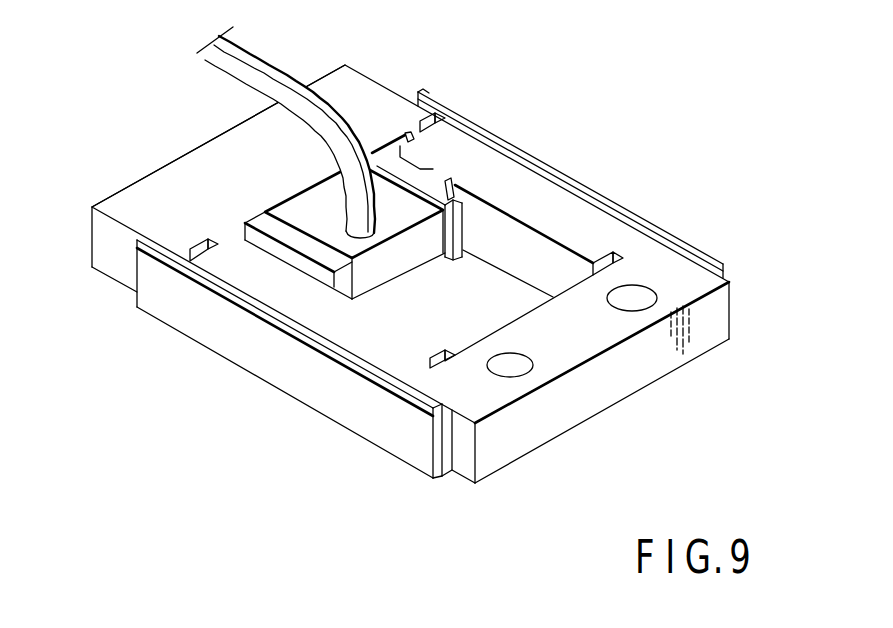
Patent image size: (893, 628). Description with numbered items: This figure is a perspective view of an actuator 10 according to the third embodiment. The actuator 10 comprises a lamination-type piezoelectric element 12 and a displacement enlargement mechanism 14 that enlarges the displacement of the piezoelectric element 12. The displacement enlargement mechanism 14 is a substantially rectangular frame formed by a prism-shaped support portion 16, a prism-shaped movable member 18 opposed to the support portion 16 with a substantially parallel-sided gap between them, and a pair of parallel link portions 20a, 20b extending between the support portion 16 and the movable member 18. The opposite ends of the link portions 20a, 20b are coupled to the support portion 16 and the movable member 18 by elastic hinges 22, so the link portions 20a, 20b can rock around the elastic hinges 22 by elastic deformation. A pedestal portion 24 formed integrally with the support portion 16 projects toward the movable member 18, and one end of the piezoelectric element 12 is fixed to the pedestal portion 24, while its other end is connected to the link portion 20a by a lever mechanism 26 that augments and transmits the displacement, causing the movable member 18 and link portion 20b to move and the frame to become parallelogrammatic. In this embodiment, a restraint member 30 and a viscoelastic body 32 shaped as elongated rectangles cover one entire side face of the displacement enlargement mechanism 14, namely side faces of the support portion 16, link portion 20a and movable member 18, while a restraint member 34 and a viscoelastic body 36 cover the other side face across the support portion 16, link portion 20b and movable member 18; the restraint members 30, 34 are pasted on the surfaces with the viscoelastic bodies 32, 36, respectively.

The actuator 10 is at (458, 76).
The piezoelectric element 12 is at (343, 223).
The displacement enlargement mechanism 14 is at (140, 340).
The support portion 16 is at (212, 158).
The movable member 18 is at (610, 383).
The link portion 20a is at (525, 182).
The link portion 20b is at (393, 333).
The elastic hinges 22 is at (402, 122).
The pedestal portion 24 is at (252, 222).
The lever mechanism 26 is at (452, 182).
The restraint member 30 is at (590, 178).
The viscoelastic body 32 is at (603, 212).
The restraint member 34 is at (282, 374).
The viscoelastic body 36 is at (341, 343).